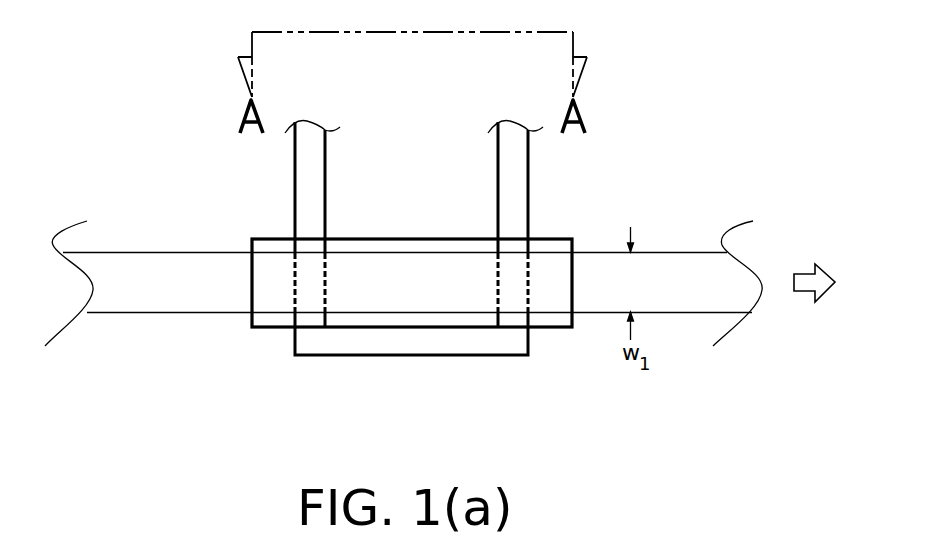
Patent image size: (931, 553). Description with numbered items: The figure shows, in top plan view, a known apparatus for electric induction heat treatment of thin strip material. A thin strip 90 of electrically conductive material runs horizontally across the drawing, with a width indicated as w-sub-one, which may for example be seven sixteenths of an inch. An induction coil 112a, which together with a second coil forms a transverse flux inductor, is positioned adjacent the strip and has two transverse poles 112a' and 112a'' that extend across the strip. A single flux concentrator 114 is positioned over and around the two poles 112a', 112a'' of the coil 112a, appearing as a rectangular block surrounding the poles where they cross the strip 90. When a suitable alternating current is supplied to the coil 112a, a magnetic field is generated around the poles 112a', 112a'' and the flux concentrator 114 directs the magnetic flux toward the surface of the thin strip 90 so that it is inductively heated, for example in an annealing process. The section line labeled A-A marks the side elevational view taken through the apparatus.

The thin strip 90 is at (115, 286).
The flux concentrator 114 is at (424, 296).
The induction coil 112a is at (412, 370).
The pole 112a' is at (278, 224).
The pole 112a'' is at (559, 224).